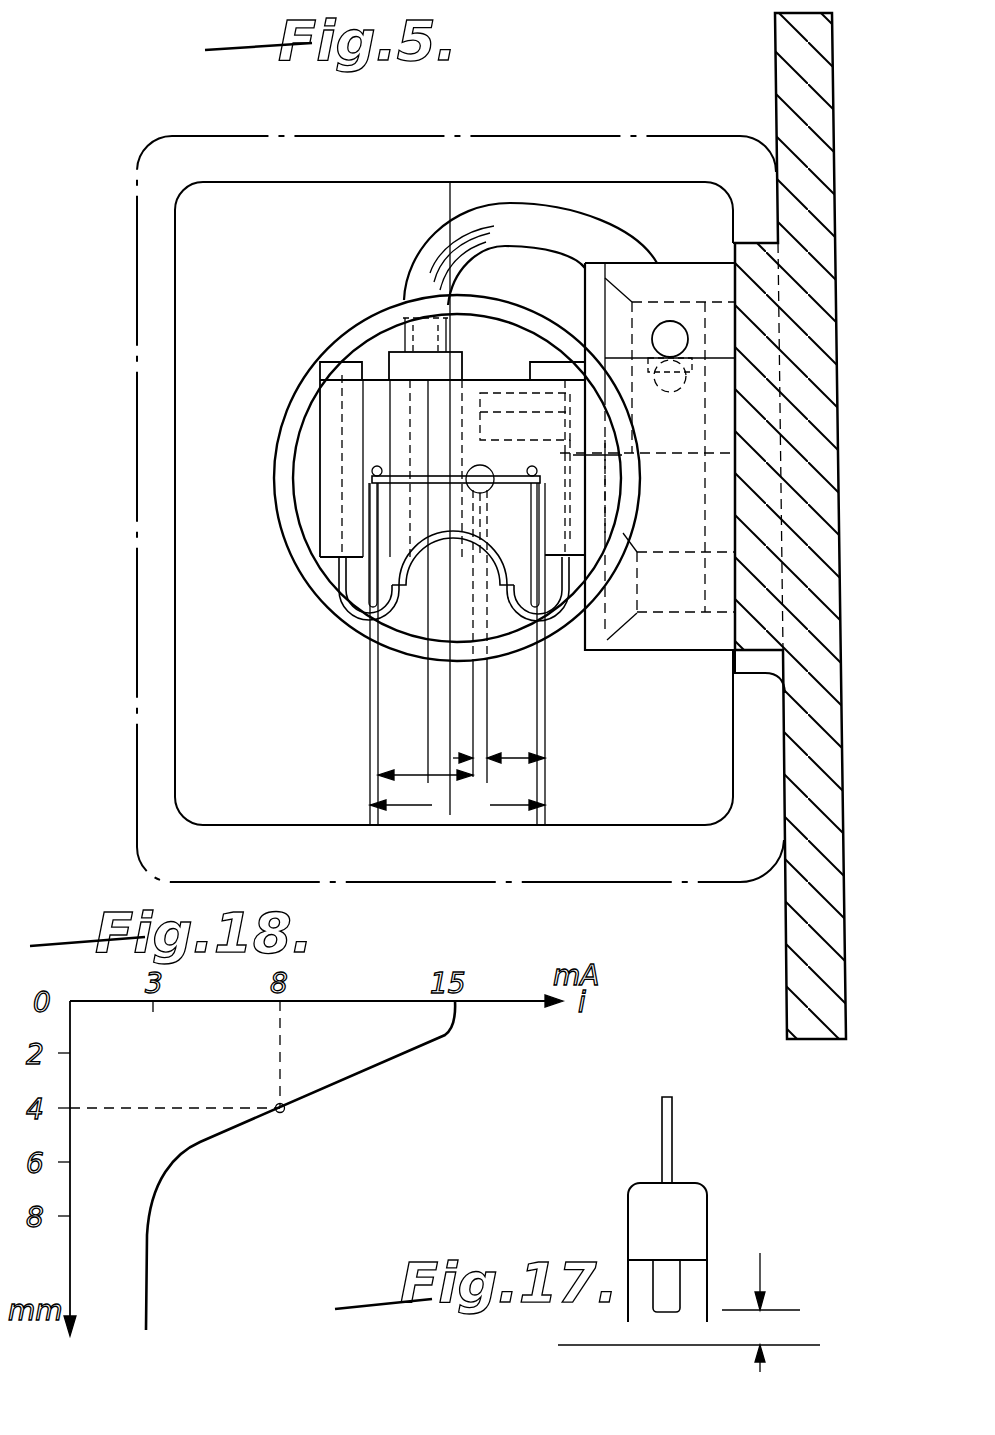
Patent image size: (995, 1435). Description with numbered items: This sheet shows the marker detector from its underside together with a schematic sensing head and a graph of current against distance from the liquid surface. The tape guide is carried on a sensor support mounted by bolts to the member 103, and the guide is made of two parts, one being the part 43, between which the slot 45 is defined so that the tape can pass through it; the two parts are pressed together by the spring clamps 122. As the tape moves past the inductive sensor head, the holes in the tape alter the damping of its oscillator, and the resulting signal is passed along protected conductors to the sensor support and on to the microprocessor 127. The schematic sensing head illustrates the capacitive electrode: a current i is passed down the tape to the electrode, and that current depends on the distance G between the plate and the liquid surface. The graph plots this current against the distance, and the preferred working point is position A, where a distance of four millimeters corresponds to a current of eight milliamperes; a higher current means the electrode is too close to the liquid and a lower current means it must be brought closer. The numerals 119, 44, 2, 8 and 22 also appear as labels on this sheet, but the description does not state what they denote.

In FIG. 5, the member 103 is at (793, 56).
In FIG. 5, the ring 119 is at (383, 316).
In FIG. 5, the holder block 44 is at (333, 456).
In FIG. 5, the slot 45 is at (372, 483).
In FIG. 5, the spring clamps 122 is at (338, 610).
In FIG. 5, the part 43 is at (450, 522).
In FIG. 5, the gap dimension 2 is at (480, 757).
In FIG. 5, the dimension 8 is at (513, 757).
In FIG. 5, the microprocessor 127 is at (425, 764).
In FIG. 5, the tube width dimension 22 is at (457, 806).
In FIG. 18, the position A is at (300, 1114).
In FIG. 18, the distance G is at (69, 1360).
In FIG. 17, the distance G is at (777, 1312).
In FIG. 17, the current i is at (686, 1095).